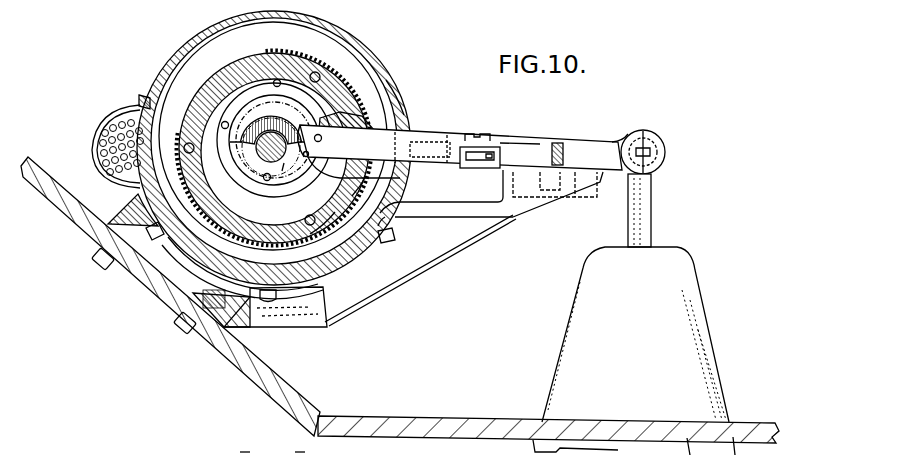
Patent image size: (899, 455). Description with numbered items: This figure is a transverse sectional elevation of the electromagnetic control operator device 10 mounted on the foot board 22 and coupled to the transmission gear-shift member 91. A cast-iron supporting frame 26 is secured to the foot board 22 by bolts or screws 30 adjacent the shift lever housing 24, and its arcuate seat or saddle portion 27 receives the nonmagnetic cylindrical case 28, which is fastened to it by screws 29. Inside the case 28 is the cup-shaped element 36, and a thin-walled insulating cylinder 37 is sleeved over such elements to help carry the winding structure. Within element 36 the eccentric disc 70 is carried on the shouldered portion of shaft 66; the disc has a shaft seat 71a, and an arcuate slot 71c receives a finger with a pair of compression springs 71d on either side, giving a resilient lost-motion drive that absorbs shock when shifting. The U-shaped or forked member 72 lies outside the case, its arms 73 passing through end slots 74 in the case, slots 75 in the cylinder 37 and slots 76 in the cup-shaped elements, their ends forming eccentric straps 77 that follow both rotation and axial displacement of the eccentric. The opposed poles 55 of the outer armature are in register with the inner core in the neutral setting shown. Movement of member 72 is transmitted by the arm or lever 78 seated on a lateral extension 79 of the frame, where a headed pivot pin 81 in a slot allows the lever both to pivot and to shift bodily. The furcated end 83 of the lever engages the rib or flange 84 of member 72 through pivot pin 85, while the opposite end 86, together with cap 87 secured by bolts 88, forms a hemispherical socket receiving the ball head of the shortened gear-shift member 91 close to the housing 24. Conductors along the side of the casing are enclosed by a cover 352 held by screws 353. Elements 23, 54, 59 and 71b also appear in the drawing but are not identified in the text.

The electromagnetic control operator device 10 is at (354, 40).
The foot board 22 is at (73, 213).
The base plate 23 is at (470, 408).
The shift lever housing 24 is at (633, 331).
The supporting frame 26 is at (327, 327).
The arcuate seat or saddle portion 27 is at (362, 263).
The cylindrical member or case 28 is at (398, 106).
The screws 29 is at (150, 238).
The bolts or screws 30 is at (106, 262).
The cup-shaped element 36 is at (243, 64).
The thin-walled cylinder 37 is at (272, 53).
The base member 54 is at (299, 451).
The poles 55 is at (244, 451).
The hole 59 is at (320, 74).
The shaft 66 is at (273, 188).
The eccentric disc 70 is at (238, 154).
The shaft seat 71a is at (264, 168).
The bearing portion 71b is at (321, 139).
The arcuate slot 71c is at (288, 125).
The compression springs 71d is at (308, 156).
The U-shaped or forked member 72 is at (449, 137).
The arms 73 is at (380, 164).
The end slots 74 is at (406, 176).
The slots 75 is at (367, 129).
The slots 76 is at (346, 203).
The eccentric straps 77 is at (282, 172).
The arm or lever 78 is at (538, 141).
The lateral extension 79 is at (513, 219).
The pivot pin 81 is at (561, 142).
The end of the lever 83 is at (509, 143).
The rib or flange 84 is at (491, 170).
The pivot pin 85 is at (471, 132).
The opposite end of the lever 86 is at (636, 132).
The cap 87 is at (666, 153).
The bolts 88 is at (666, 163).
The transmission gear-shift member 91 is at (645, 208).
The cover 352 is at (103, 115).
The screws 353 is at (142, 95).